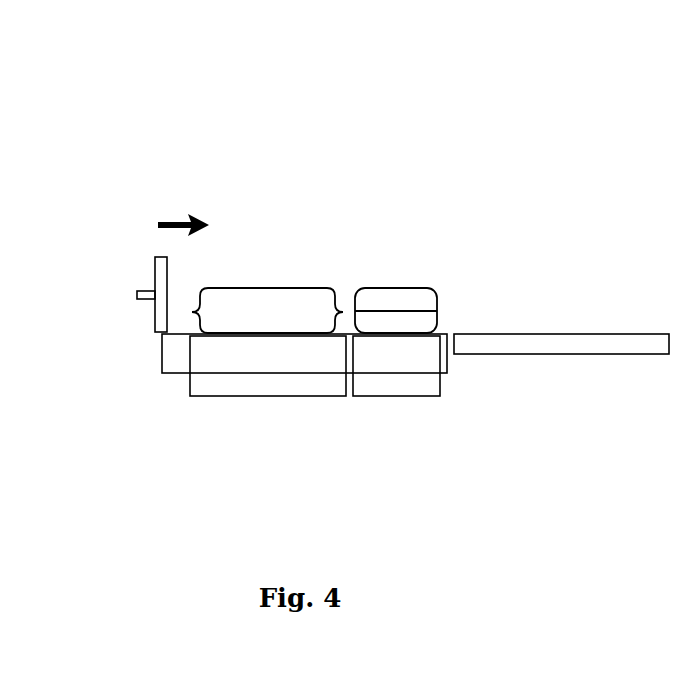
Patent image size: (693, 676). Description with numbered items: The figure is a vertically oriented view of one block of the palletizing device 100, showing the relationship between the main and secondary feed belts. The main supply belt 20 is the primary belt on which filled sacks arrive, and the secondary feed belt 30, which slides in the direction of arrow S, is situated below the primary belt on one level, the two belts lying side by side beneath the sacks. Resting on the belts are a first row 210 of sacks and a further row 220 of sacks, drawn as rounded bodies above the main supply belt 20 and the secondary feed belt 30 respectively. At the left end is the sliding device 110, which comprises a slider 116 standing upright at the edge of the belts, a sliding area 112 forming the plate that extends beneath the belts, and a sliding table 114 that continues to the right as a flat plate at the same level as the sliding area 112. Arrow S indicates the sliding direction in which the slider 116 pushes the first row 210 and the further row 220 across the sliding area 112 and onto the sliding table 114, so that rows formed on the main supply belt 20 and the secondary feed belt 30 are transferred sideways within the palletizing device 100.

The palletizing device 100 is at (201, 133).
The sliding device 110 is at (131, 320).
The sliding area 112 is at (177, 360).
The sliding table 114 is at (565, 342).
The slider 116 is at (153, 265).
The main supply belt 20 is at (253, 385).
The secondary feed belt 30 is at (392, 385).
The first row 210 is at (267, 261).
The further row 220 is at (399, 261).